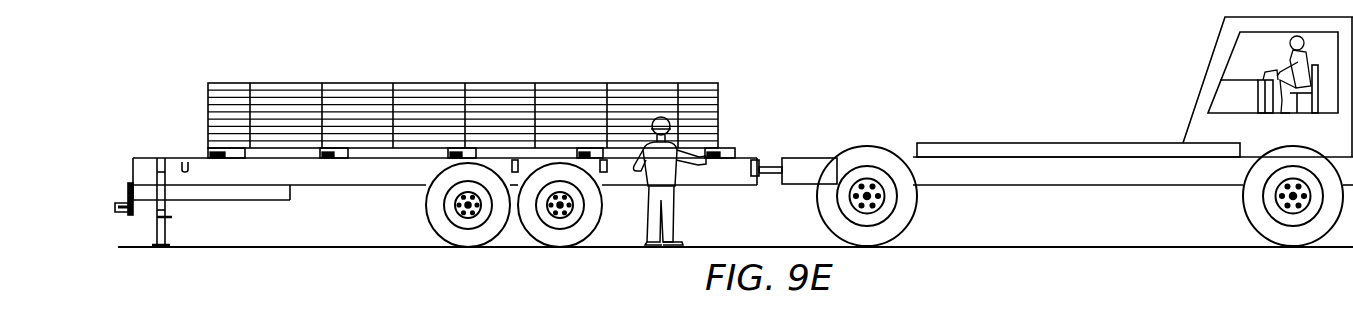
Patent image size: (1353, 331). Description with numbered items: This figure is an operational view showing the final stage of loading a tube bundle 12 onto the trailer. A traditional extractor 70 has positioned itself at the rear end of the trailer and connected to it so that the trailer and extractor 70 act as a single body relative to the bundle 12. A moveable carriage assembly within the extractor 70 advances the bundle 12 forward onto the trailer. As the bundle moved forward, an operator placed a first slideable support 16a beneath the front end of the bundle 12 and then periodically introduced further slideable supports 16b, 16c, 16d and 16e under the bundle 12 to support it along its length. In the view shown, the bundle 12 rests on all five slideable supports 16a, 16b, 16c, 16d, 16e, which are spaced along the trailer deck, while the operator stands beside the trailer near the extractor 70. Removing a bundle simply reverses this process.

The tube bundle 12 is at (360, 83).
The first slideable support 16a is at (225, 154).
The slideable support 16b is at (328, 154).
The slideable support 16c is at (446, 156).
The slideable support 16d is at (587, 153).
The slideable support 16e is at (728, 147).
The extractor 70 is at (1198, 40).